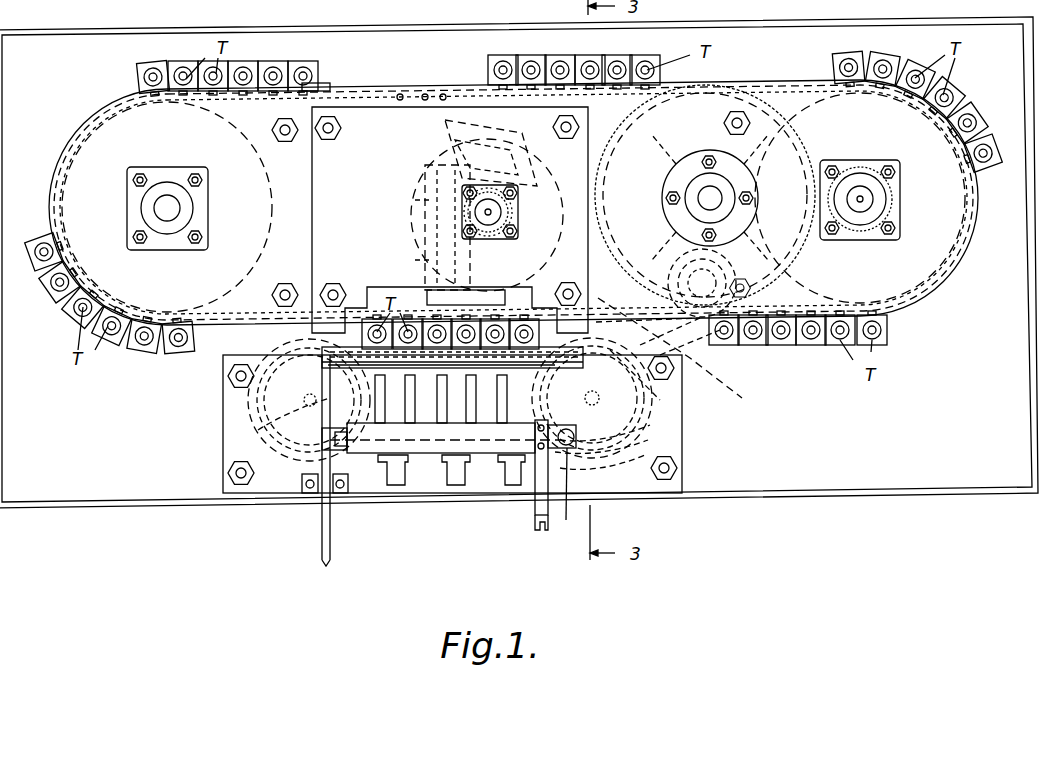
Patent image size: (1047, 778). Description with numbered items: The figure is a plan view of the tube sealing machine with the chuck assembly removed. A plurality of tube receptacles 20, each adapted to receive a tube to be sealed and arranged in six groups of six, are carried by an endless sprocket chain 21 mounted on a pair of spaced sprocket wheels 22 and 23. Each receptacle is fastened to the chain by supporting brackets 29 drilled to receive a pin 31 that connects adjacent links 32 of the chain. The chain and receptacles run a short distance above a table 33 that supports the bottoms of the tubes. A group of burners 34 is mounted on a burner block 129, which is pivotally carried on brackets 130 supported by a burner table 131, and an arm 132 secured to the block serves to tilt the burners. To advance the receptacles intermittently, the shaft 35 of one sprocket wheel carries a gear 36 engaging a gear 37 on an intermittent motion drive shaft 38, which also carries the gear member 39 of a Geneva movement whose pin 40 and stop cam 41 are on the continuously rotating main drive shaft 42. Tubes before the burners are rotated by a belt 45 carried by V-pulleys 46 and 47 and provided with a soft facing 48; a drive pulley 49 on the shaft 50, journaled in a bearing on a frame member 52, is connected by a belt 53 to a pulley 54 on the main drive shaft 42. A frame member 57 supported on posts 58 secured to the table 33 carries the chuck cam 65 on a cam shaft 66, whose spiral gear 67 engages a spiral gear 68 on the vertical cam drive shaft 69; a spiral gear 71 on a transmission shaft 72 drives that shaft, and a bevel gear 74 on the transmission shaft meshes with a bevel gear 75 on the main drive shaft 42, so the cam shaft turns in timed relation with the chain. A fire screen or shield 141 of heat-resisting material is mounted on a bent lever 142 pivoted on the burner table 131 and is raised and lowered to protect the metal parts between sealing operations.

The tube receptacle 20 is at (300, 70).
The endless sprocket chain 21 is at (373, 93).
The sprocket wheel 22 is at (246, 133).
The sprocket wheel 23 is at (810, 100).
The supporting bracket 29 is at (318, 88).
The pin 31 is at (443, 94).
The link 32 is at (400, 100).
The table 33 is at (160, 487).
The burner 34 is at (448, 405).
The shaft 35 is at (875, 198).
The gear 36 is at (858, 165).
The gear 37 is at (705, 195).
The intermittent motion drive shaft 38 is at (708, 199).
The gear member of Geneva movement 39 is at (680, 158).
The pin of Geneva movement 40 is at (737, 280).
The stop cam of Geneva movement 41 is at (739, 262).
The main drive shaft 42 is at (670, 348).
The belt 45 is at (250, 405).
The V-pulley 46 is at (272, 425).
The V-pulley 47 is at (645, 430).
The facing 48 is at (600, 440).
The drive pulley 49 is at (602, 465).
The shaft 50 is at (592, 392).
The frame member 52 is at (803, 495).
The belt 53 is at (683, 398).
The pulley 54 is at (665, 320).
The frame member 57 is at (318, 250).
The post 58 is at (328, 136).
The cam 65 is at (428, 296).
The cam shaft 66 is at (490, 229).
The spiral gear 67 is at (413, 216).
The spiral gear 68 is at (520, 215).
The cam drive shaft 69 is at (490, 215).
The spiral gear 71 is at (491, 150).
The transmission shaft 72 is at (560, 202).
The bevel gear 74 is at (709, 271).
The bevel gear 75 is at (745, 277).
The burner block 129 is at (430, 456).
The bracket 130 is at (340, 492).
The burner table 131 is at (487, 487).
The arm 132 is at (537, 512).
The fire screen or shield 141 is at (332, 358).
The bent lever 142 is at (322, 520).